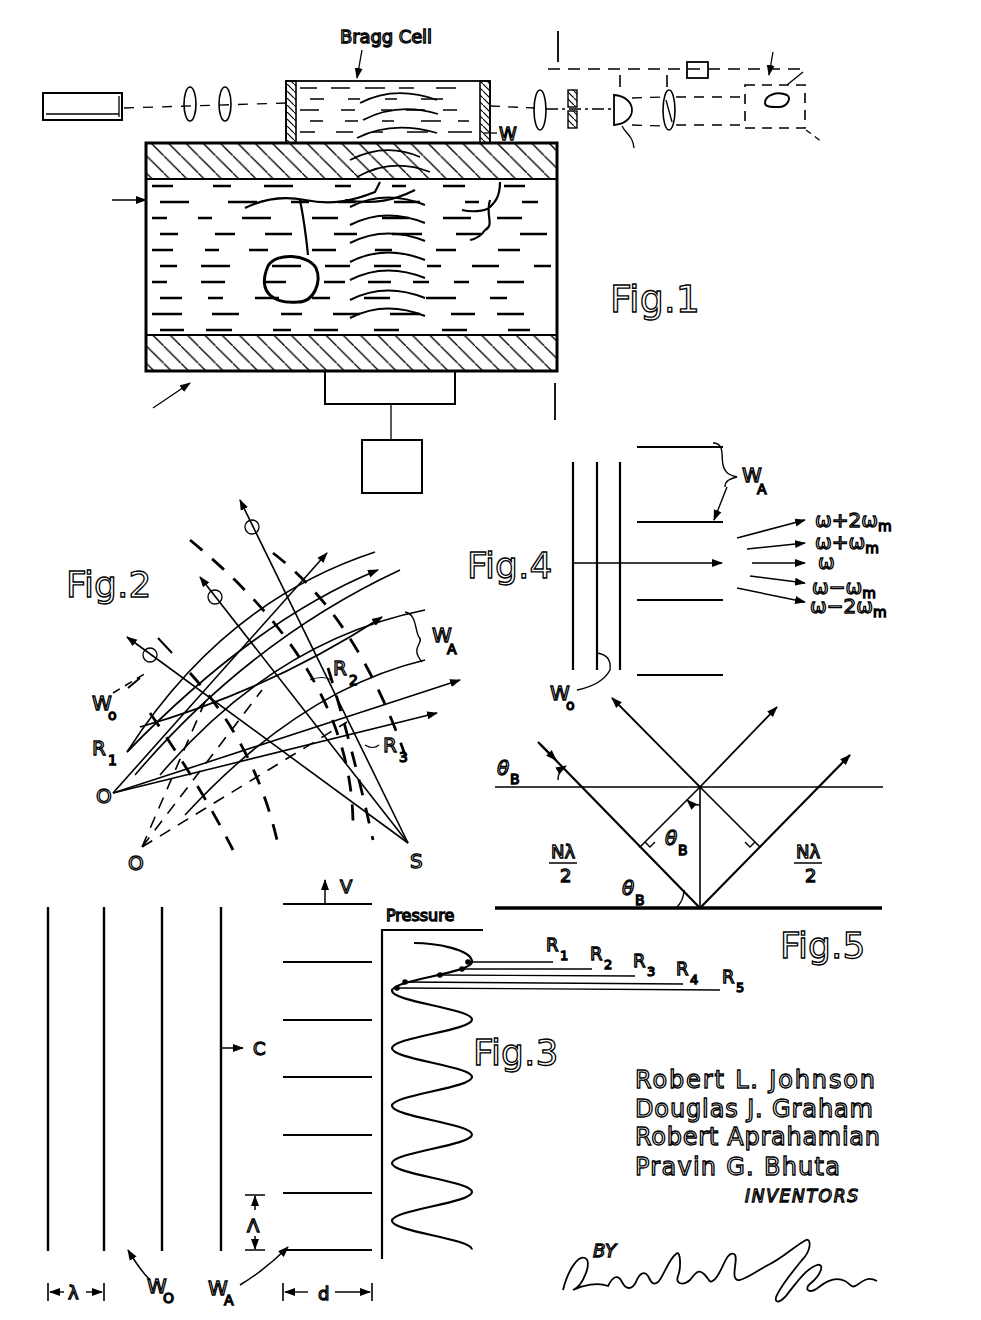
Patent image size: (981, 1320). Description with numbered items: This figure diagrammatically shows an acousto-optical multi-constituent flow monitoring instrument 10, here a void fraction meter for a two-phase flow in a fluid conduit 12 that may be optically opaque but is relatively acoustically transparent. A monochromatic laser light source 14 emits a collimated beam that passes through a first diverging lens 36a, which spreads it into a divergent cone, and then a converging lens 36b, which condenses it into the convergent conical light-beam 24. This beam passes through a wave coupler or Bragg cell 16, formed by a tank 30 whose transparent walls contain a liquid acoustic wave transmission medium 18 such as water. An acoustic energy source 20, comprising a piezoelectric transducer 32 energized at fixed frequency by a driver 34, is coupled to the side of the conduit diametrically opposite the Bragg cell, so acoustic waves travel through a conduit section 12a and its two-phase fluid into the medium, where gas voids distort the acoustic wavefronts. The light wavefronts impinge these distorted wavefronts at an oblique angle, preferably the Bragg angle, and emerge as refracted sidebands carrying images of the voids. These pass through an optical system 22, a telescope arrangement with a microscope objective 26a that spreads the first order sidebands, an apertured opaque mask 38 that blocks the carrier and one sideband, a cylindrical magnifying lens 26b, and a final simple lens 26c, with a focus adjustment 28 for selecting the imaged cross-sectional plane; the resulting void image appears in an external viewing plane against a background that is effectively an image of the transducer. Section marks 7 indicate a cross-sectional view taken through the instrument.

The section line 7 is at (561, 38).
The acousto-optical multi-constituent flow monitoring instrument 10 is at (158, 404).
The fluid conduit 12 is at (355, 277).
The conduit section 12a is at (293, 368).
The monochromatic light source 14 is at (96, 92).
The Bragg cell 16 is at (430, 52).
The acoustic wave transmission medium 18 is at (313, 88).
The acoustic energy source 20 is at (374, 432).
The optical system 22 is at (664, 102).
The light-beam 24 is at (268, 120).
The microscope objective 26a is at (532, 90).
The cylindrical magnifying lens 26b is at (636, 138).
The final simple lens 26c is at (672, 130).
The focus adjustment 28 is at (700, 60).
The tank 30 is at (465, 81).
The transducer 32 is at (401, 399).
The driver 34 is at (403, 475).
The first diverging lens 36a is at (192, 87).
The converging lens 36b is at (248, 48).
The apertured opaque mask 38 is at (574, 130).